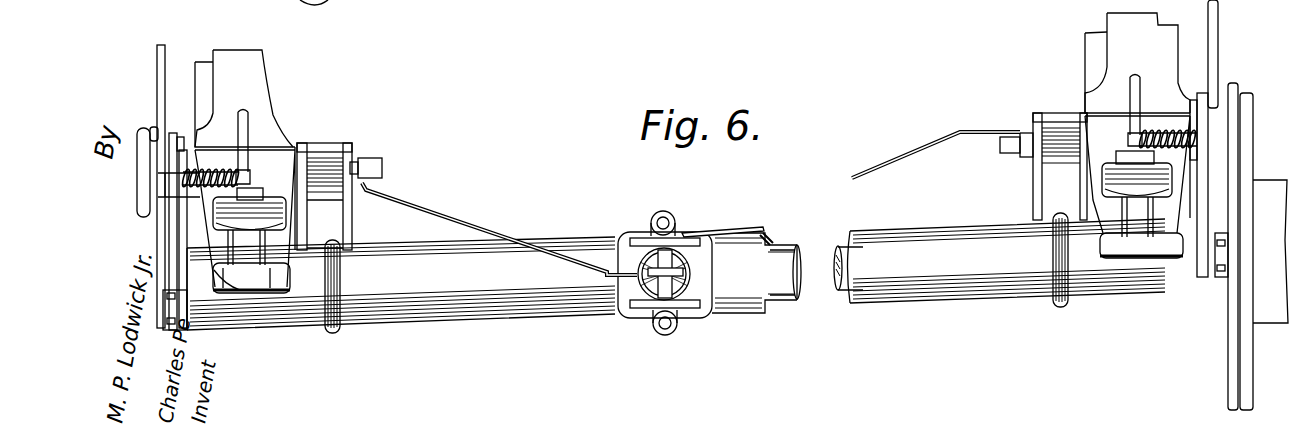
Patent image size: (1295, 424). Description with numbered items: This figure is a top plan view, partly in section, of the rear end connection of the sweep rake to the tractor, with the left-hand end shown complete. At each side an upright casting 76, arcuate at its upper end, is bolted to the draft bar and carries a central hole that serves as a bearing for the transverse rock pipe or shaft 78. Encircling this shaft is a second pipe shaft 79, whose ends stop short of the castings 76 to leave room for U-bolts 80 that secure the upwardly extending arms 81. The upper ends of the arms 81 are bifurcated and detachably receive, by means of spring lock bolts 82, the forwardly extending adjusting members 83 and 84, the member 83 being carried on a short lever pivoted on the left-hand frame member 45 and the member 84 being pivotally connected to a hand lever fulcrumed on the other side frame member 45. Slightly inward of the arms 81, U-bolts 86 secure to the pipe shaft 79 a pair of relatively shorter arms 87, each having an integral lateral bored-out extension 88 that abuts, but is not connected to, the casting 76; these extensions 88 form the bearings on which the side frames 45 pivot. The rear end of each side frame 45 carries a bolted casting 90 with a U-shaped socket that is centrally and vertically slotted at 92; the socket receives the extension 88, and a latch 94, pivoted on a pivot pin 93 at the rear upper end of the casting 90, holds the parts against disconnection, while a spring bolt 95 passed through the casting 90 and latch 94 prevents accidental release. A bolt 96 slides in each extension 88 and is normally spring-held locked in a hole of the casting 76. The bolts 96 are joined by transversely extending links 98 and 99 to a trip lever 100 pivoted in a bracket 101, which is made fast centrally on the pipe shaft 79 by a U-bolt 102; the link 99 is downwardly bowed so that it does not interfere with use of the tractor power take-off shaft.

The side frame member 45 is at (283, 90).
The upright casting 76 is at (140, 150).
The transverse rock pipe or shaft 78 is at (838, 288).
The pipe shaft 79 is at (772, 238).
The U-bolts 80 is at (1221, 285).
The upwardly extending arms 81 is at (168, 218).
The spring lock bolts 82 is at (250, 175).
The forwardly extending adjusting member 83 is at (158, 52).
The forwardly extending adjusting member 84 is at (1217, 22).
The U-bolts 86 is at (343, 300).
The shorter arms 87 is at (343, 222).
The lateral bored-out extensions 88 is at (298, 182).
The casting 90 is at (262, 78).
The slot 92 is at (293, 263).
The pivot pin 93 is at (213, 300).
The latch 94 is at (262, 255).
The spring bolt 95 is at (227, 280).
The bolt 96 is at (383, 168).
The link 98 is at (455, 218).
The link 99 is at (748, 216).
The trip lever 100 is at (635, 300).
The bracket 101 is at (655, 232).
The U-bolt 102 is at (680, 325).